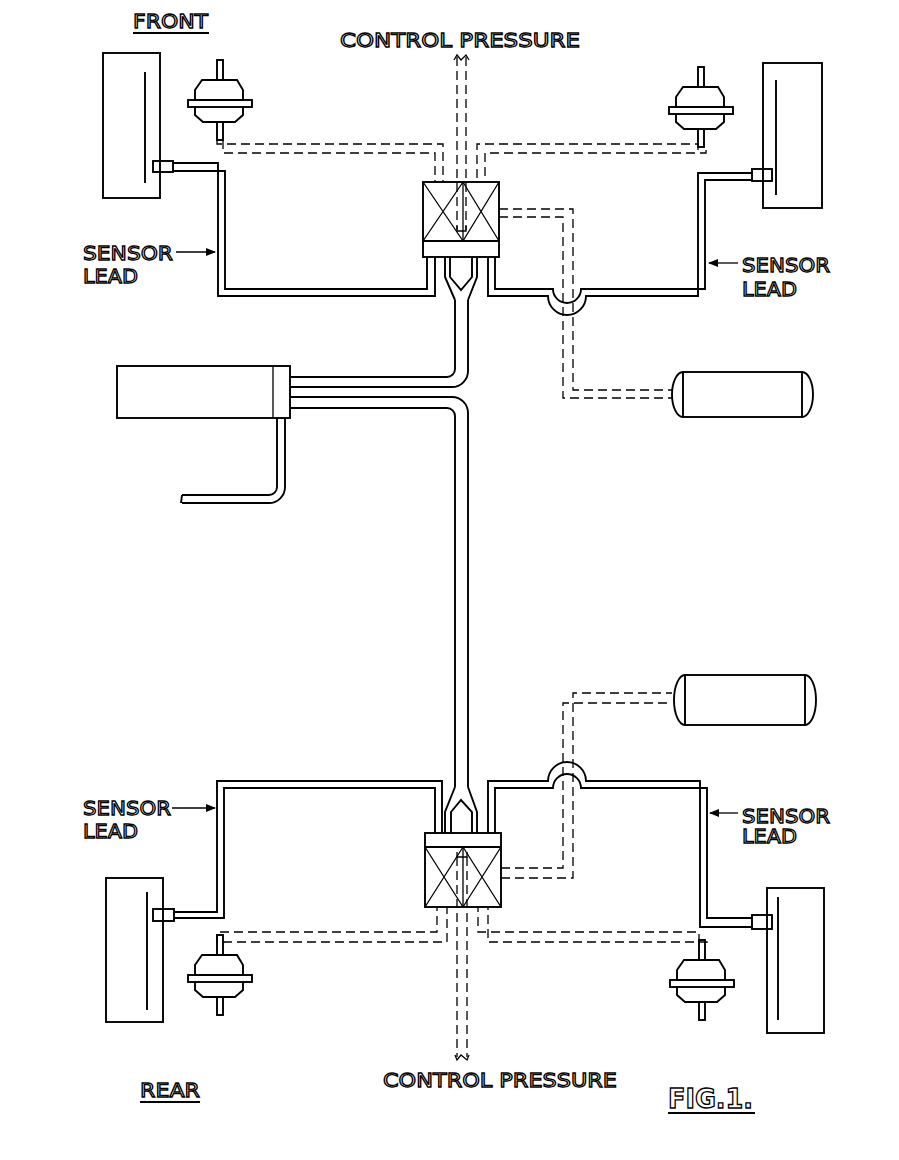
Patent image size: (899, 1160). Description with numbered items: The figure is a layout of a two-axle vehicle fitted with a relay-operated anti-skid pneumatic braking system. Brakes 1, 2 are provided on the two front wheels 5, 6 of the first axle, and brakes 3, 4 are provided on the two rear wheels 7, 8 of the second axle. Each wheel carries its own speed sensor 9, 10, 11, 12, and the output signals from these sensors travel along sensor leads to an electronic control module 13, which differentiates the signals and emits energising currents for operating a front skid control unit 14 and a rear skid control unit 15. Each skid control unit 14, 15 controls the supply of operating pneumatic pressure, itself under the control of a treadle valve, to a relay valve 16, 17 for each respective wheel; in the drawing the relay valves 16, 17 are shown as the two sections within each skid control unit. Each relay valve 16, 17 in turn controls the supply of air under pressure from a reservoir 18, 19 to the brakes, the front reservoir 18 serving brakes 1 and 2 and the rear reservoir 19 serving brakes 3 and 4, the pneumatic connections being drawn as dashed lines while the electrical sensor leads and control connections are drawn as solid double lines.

The brake 1 is at (232, 95).
The brake 2 is at (690, 101).
The brake 3 is at (237, 986).
The brake 4 is at (700, 992).
The front wheel 5 is at (125, 148).
The front wheel 6 is at (790, 90).
The rear wheel 7 is at (131, 923).
The rear wheel 8 is at (805, 918).
The speed sensor 9 is at (170, 173).
The speed sensor 10 is at (758, 183).
The speed sensor 11 is at (170, 908).
The speed sensor 12 is at (758, 913).
The electronic control module 13 is at (181, 364).
The front skid control unit 14 is at (428, 212).
The rear skid control unit 15 is at (432, 870).
The relay valve 16 is at (440, 193).
The relay valve 17 is at (482, 195).
The reservoir 18 is at (732, 408).
The reservoir 19 is at (728, 690).